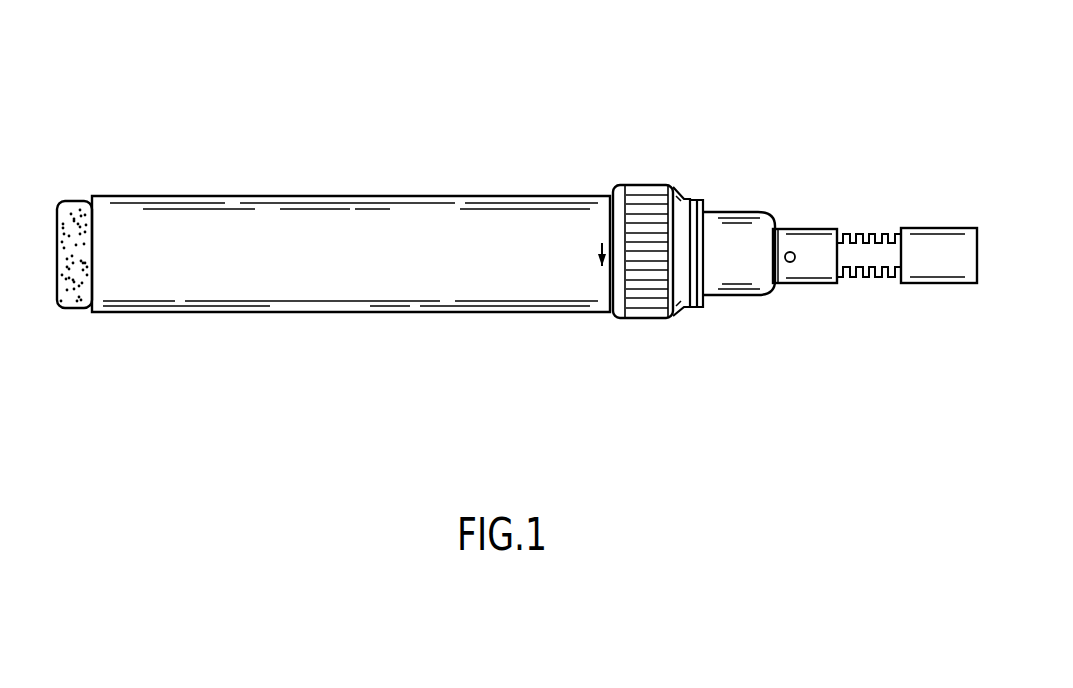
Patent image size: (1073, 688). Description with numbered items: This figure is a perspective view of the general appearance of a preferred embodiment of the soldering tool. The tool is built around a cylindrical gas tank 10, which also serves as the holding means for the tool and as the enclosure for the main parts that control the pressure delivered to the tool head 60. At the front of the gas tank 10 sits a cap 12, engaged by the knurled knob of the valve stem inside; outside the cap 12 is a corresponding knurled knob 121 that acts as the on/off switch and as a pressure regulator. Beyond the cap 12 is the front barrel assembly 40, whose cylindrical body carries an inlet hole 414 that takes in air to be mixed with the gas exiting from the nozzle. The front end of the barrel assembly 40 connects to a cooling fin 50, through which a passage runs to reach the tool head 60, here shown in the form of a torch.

The cylindrical gas tank 10 is at (275, 313).
The cap 12 is at (698, 200).
The knurled knob 121 is at (655, 185).
The front barrel assembly 40 is at (790, 284).
The inlet hole 414 is at (792, 251).
The cooling fin 50 is at (872, 281).
The tool head 60 is at (940, 229).